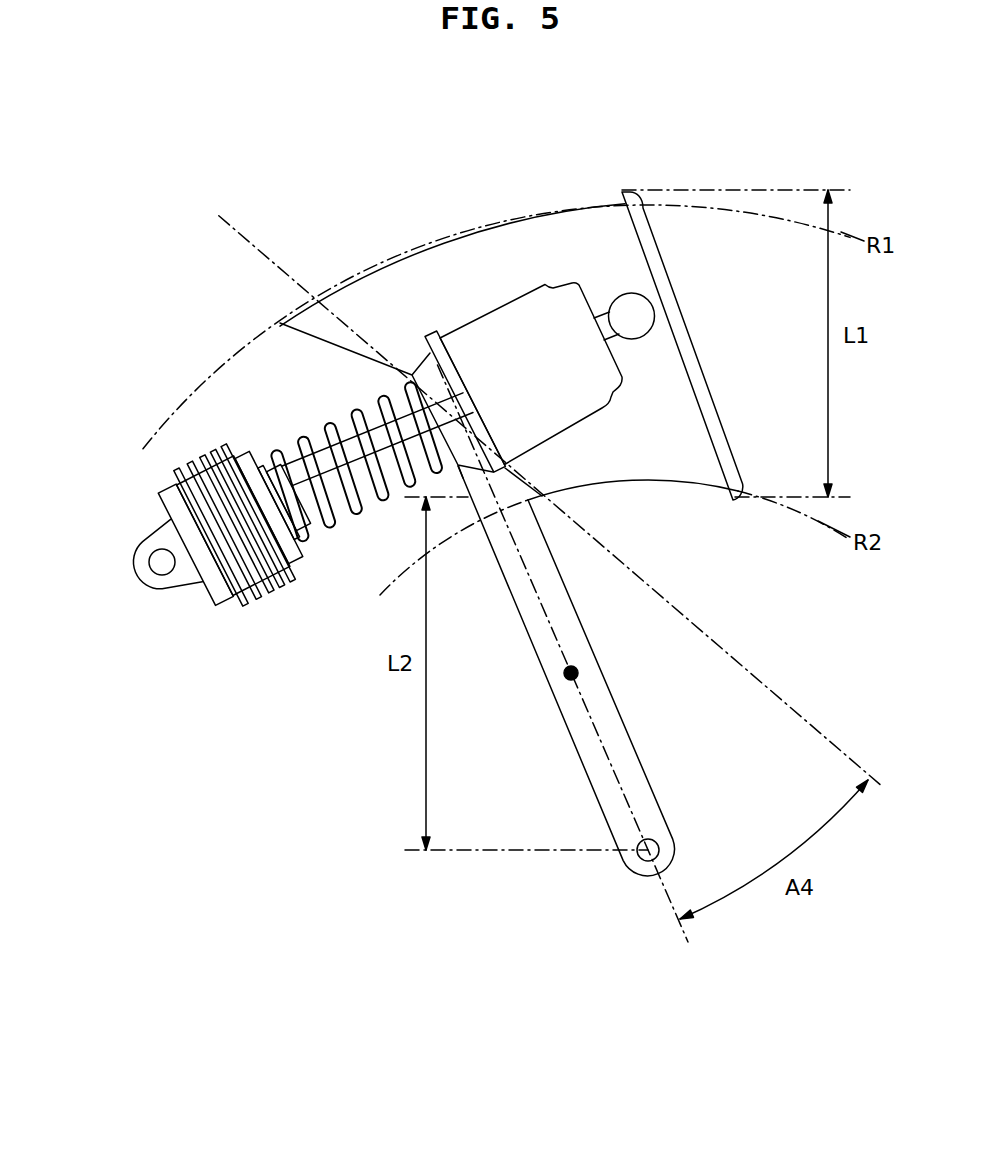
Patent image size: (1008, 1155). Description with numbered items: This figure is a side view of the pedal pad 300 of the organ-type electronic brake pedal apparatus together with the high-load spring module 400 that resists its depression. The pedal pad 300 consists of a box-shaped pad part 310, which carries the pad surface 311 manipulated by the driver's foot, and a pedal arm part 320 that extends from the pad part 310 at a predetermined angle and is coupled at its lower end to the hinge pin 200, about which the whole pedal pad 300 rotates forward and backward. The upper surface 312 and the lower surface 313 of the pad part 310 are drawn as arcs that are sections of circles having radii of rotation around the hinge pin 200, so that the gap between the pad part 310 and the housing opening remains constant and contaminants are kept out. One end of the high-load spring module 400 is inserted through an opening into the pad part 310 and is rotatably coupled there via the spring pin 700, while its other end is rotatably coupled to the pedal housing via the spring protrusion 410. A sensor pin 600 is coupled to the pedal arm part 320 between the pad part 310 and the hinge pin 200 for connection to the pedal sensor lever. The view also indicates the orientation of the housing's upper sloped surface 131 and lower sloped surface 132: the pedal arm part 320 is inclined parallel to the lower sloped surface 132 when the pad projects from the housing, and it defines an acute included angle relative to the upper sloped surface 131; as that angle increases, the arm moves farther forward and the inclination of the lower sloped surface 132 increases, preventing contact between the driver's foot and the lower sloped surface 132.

The upper sloped surface 131 is at (262, 257).
The lower sloped surface 132 is at (672, 903).
The hinge pin 200 is at (651, 847).
The pedal pad 300 is at (597, 197).
The pad part 310 is at (553, 235).
The pad surface 311 is at (703, 346).
The upper surface 312 is at (497, 222).
The lower surface 313 is at (647, 481).
The pedal arm part 320 is at (607, 719).
The high-load spring module 400 is at (233, 606).
The spring protrusion 410 is at (160, 563).
The sensor pin 600 is at (570, 676).
The spring pin 700 is at (636, 313).